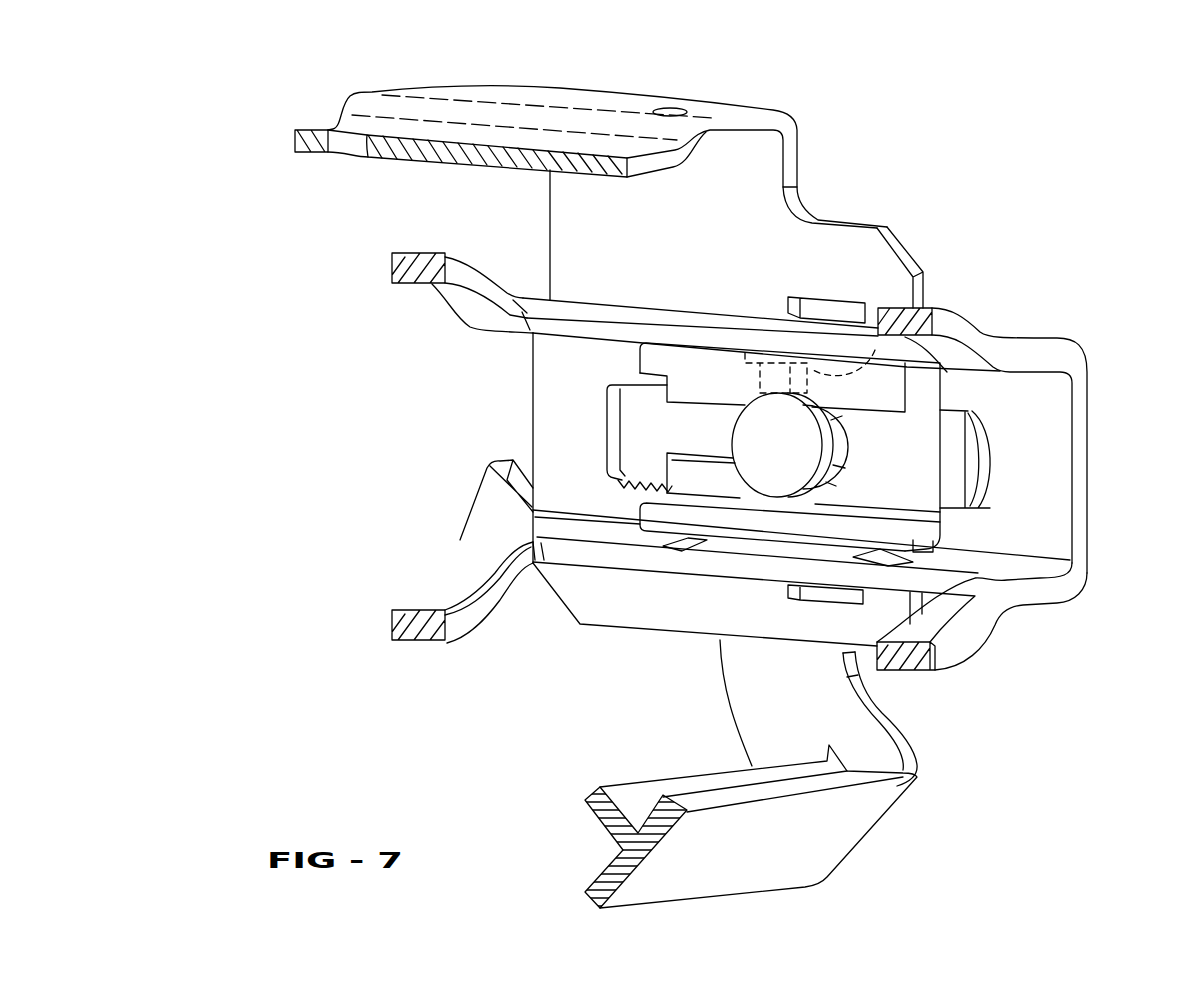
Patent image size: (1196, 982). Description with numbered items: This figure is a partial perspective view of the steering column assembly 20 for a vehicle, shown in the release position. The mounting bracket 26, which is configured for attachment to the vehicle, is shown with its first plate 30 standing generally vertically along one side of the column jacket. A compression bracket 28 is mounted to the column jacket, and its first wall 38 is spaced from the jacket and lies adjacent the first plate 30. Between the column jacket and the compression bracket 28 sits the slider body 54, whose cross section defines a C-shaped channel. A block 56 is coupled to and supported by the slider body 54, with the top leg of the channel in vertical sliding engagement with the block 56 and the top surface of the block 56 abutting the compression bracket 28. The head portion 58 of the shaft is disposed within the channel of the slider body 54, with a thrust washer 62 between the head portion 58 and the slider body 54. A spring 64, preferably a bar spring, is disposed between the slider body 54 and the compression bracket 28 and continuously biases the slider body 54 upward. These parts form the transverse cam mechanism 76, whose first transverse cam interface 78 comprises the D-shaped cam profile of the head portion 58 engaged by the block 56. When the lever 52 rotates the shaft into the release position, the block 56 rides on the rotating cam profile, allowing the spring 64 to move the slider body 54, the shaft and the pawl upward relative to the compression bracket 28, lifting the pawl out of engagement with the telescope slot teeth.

The steering column assembly 20 is at (905, 100).
The mounting bracket 26 is at (647, 103).
The compression bracket 28 is at (483, 315).
The first plate 30 is at (577, 252).
The first wall 38 is at (1045, 412).
The lever 52 is at (910, 752).
The slider body 54 is at (922, 392).
The block 56 is at (870, 352).
The head portion 58 is at (775, 467).
The thrust washer 62 is at (845, 445).
The spring 64 is at (878, 546).
The transverse cam mechanism 76 is at (717, 420).
The first transverse cam interface 78 is at (773, 404).